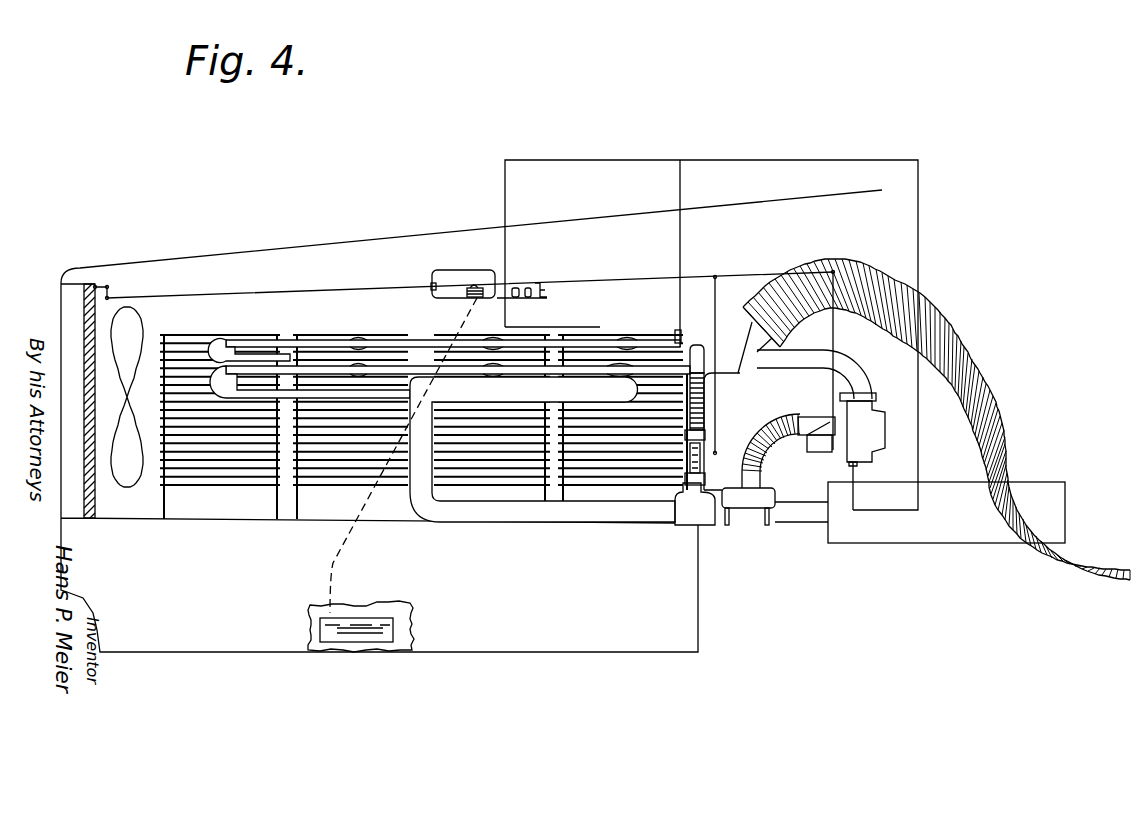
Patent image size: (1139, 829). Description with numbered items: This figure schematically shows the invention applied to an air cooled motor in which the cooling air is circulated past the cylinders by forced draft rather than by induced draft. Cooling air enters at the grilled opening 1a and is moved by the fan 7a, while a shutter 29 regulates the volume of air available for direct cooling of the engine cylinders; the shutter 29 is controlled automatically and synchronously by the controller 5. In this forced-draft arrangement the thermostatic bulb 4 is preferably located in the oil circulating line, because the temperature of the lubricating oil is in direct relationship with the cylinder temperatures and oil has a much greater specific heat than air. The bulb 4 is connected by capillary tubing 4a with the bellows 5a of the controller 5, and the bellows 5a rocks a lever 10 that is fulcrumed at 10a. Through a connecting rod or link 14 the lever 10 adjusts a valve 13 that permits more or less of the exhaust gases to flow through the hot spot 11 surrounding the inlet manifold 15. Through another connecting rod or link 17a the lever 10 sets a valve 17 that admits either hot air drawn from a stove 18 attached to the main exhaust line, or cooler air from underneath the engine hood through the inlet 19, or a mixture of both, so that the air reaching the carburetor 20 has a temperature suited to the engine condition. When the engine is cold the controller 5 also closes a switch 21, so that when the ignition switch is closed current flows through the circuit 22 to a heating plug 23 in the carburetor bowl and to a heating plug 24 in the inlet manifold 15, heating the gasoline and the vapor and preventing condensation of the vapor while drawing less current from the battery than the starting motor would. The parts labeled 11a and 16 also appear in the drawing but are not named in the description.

The grilled opening 1a is at (61, 314).
The shutter 29 is at (92, 380).
The fan 7a is at (135, 326).
The lever 10 is at (285, 292).
The fulcrum 10a is at (431, 288).
The circuit 22 is at (507, 194).
The controller 5 is at (455, 275).
The bellows 5a is at (463, 298).
The switch 21 is at (548, 293).
The inlet manifold 15 is at (425, 428).
The heating plug 24 is at (680, 343).
The valve 13 is at (704, 458).
The connecting rod or link 14 is at (714, 414).
The hot spot 11 is at (751, 340).
The flexible duct 11a is at (968, 356).
The connecting rod or link 17a is at (834, 346).
The carburetor 20 is at (866, 431).
The heating plug 23 is at (862, 464).
The tank 16 is at (946, 512).
The valve 17 is at (818, 424).
The inlet 19 is at (822, 453).
The stove 18 is at (761, 469).
The capillary tubing 4a is at (340, 552).
The thermostatic bulb 4 is at (363, 638).